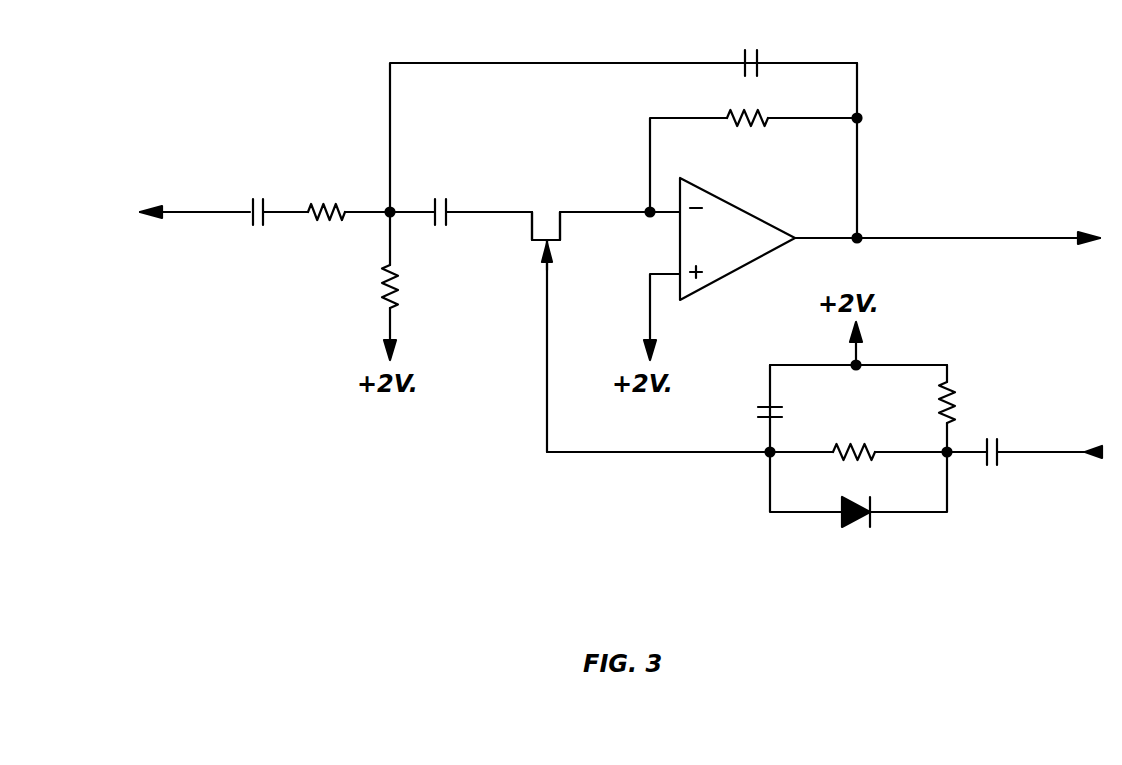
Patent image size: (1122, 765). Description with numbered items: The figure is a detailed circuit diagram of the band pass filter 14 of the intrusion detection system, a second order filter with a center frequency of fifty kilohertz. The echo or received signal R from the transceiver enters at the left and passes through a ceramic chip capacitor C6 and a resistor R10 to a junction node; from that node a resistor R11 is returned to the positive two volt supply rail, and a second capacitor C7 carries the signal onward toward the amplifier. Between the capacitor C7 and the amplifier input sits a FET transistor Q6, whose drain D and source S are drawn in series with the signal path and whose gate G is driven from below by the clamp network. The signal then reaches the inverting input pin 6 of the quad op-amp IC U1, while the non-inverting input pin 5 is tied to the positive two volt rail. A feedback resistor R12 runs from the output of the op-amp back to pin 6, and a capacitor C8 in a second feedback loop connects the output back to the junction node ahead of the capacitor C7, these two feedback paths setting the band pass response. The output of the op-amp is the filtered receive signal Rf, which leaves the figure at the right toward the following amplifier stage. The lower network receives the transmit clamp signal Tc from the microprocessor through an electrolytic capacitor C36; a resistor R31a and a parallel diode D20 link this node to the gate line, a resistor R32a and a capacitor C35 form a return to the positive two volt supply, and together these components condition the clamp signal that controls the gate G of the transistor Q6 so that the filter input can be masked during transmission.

The band pass filter 14 is at (952, 55).
The received signal R is at (178, 206).
The capacitor C6 is at (273, 196).
The resistor R10 is at (345, 194).
The resistor R11 is at (419, 312).
The capacitor C7 is at (461, 196).
The transistor Q6 is at (581, 306).
The drain of Q6 D is at (522, 213).
The source of Q6 S is at (569, 213).
The gate of Q6 G is at (560, 257).
The quad op-amp IC U1 is at (750, 269).
The inverting input pin 6 is at (665, 197).
The non-inverting input pin 5 is at (662, 317).
The feedback resistor R12 is at (791, 102).
The capacitor C8 is at (794, 130).
The filtered receive signal Rf is at (1074, 234).
The capacitor C35 is at (738, 417).
The resistor R31a is at (858, 434).
The resistor R32a is at (983, 408).
The diode D20 is at (887, 503).
The electrolytic capacitor C36 is at (1024, 437).
The transmit clamp signal Tc is at (1048, 430).